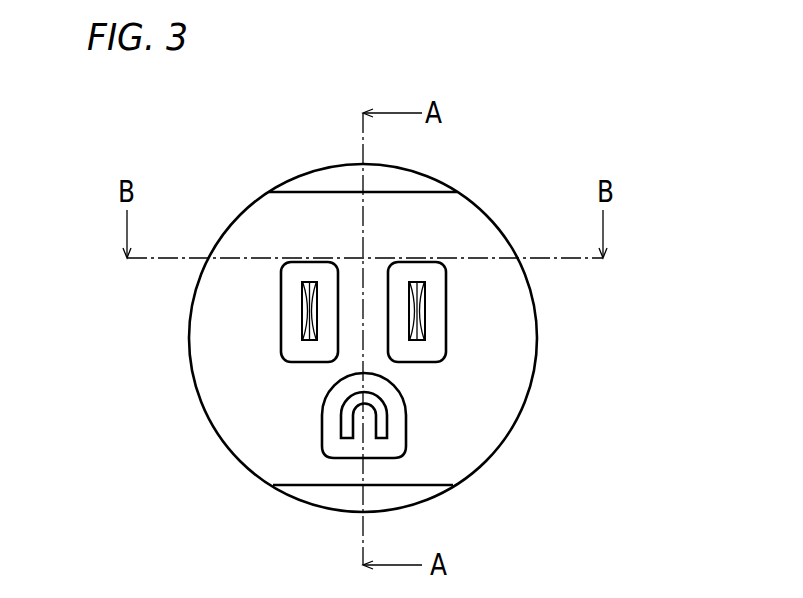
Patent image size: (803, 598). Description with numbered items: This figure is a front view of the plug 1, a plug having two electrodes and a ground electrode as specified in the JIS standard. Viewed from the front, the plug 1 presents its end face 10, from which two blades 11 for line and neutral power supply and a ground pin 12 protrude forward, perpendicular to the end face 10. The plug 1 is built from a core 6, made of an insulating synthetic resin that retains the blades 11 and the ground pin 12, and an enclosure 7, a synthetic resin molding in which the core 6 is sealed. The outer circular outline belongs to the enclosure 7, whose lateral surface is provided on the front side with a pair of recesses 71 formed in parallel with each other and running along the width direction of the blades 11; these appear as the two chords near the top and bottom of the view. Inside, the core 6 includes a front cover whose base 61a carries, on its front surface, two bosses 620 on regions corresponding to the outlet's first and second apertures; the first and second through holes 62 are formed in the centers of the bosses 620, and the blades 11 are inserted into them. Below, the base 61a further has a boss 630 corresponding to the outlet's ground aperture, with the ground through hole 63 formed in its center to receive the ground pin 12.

The plug 1 is at (225, 443).
The enclosure 7 is at (366, 338).
The end face 10 is at (366, 338).
The recesses 71 is at (330, 190).
The blades 11 is at (371, 343).
The core 6 is at (452, 343).
The base 61a is at (432, 347).
The bosses 620 is at (290, 294).
The first and second through holes 62 is at (305, 308).
The boss 630 is at (332, 429).
The ground through hole 63 is at (348, 408).
The ground pin 12 is at (356, 420).